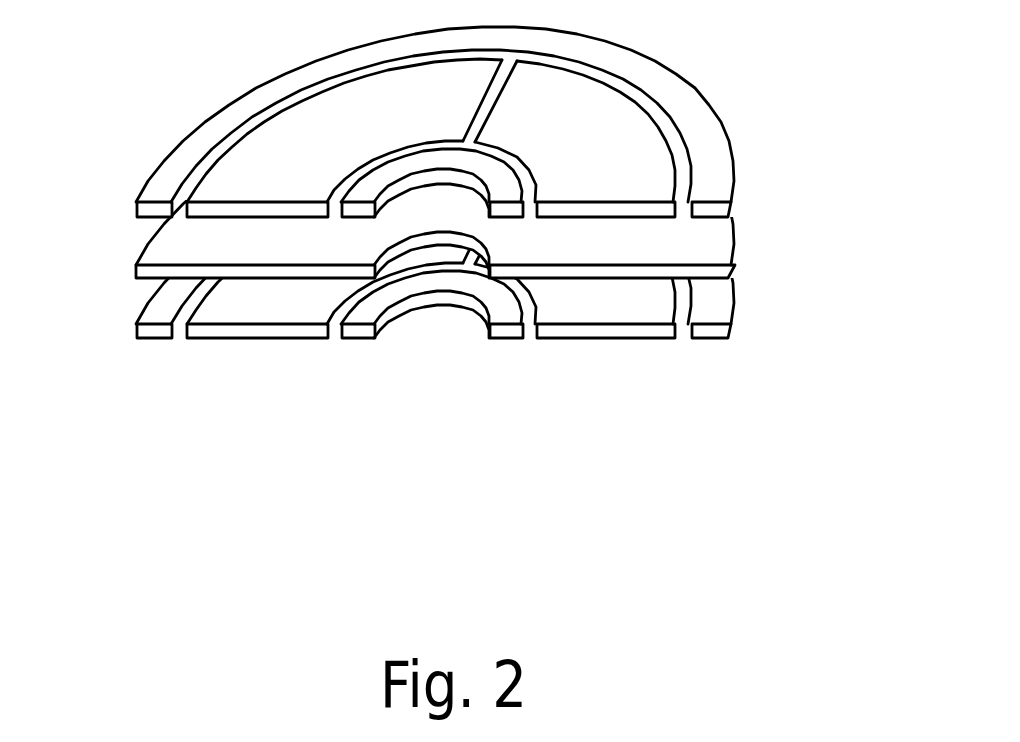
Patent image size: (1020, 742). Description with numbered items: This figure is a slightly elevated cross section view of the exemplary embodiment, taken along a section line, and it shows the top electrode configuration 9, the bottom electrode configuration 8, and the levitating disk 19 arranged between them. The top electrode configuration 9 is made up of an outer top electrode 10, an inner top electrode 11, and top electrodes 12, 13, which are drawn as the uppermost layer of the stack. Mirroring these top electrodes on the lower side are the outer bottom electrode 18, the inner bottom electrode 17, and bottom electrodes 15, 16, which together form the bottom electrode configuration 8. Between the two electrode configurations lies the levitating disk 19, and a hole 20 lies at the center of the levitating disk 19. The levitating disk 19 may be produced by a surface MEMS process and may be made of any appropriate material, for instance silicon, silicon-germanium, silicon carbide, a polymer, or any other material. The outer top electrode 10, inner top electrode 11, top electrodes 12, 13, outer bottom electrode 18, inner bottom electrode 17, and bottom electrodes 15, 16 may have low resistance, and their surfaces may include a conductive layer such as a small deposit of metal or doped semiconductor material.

The bottom electrode configuration 8 is at (513, 302).
The top electrode configuration 9 is at (377, 169).
The outer top electrode 10 is at (249, 116).
The inner top electrode 11 is at (410, 174).
The top electrode 12 is at (286, 165).
The top electrode 13 is at (581, 165).
The bottom electrode 15 is at (268, 313).
The bottom electrode 16 is at (603, 314).
The inner bottom electrode 17 is at (503, 313).
The outer bottom electrode 18 is at (718, 311).
The levitating disk 19 is at (717, 250).
The hole 20 is at (429, 340).